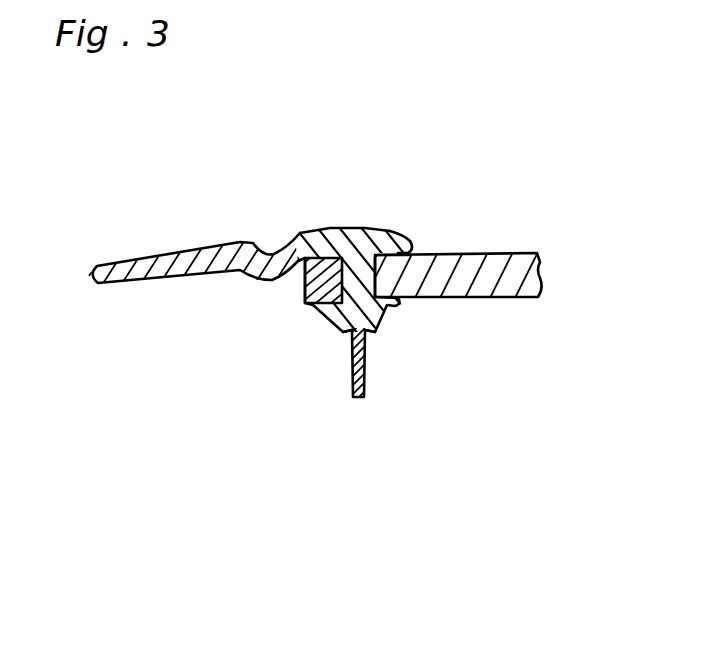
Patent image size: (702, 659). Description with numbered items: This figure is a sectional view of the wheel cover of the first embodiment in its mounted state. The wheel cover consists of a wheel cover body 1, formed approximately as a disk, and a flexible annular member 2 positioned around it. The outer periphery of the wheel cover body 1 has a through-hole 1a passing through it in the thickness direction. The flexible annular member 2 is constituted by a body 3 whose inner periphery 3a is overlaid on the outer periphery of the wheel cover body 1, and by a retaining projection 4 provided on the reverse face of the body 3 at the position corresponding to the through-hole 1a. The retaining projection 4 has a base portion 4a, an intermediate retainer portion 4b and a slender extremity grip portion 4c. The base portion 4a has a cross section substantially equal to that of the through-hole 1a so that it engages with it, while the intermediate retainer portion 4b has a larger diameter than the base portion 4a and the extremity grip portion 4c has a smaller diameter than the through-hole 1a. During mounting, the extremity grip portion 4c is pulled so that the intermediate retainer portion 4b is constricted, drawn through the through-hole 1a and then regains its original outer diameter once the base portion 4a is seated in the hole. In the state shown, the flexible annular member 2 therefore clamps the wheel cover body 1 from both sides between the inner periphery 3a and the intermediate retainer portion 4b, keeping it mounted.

The wheel cover body 1 is at (523, 252).
The through-hole 1a is at (372, 252).
The flexible annular member 2 is at (231, 241).
The body 3 is at (307, 232).
The inner periphery 3a is at (401, 238).
The retaining projection 4 is at (274, 377).
The base portion 4a is at (305, 302).
The intermediate retainer portion 4b is at (340, 327).
The extremity grip portion 4c is at (350, 392).